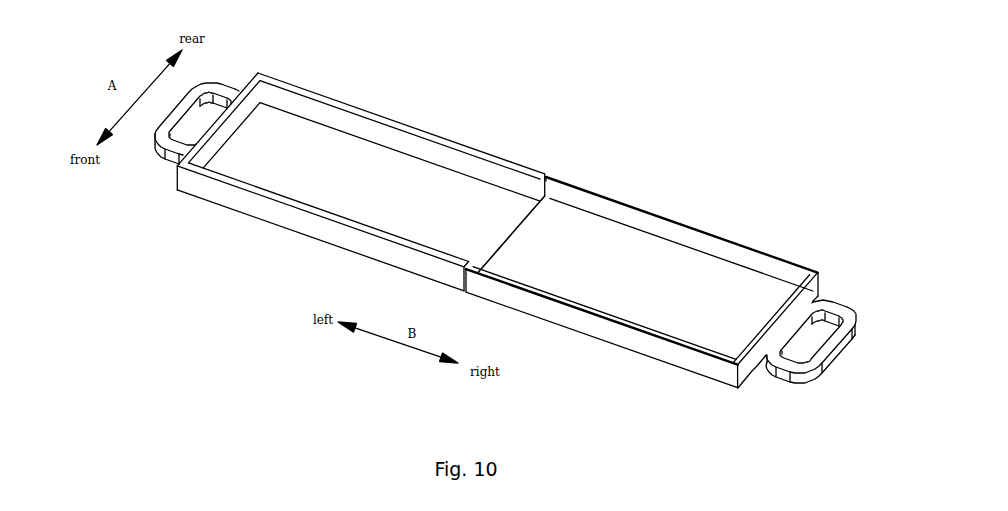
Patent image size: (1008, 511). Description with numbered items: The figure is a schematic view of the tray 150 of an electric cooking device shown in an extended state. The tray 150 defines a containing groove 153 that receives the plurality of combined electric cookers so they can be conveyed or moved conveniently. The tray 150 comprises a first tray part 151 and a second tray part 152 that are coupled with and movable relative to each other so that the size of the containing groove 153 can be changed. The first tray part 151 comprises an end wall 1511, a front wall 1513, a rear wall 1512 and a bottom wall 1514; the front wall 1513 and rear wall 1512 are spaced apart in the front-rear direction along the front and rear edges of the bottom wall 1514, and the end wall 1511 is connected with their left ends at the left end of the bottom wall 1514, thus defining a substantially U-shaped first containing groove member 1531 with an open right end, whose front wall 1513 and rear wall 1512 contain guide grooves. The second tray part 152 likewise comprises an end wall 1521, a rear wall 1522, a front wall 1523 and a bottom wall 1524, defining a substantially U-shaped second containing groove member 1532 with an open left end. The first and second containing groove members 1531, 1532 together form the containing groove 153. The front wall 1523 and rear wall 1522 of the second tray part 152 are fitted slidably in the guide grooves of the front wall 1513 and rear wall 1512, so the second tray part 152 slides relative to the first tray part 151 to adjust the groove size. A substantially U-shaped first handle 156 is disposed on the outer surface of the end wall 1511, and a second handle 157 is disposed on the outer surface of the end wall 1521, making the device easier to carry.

The tray 150 is at (697, 177).
The first tray part 151 is at (188, 188).
The end wall 1511 is at (253, 97).
The rear wall 1512 is at (312, 103).
The front wall 1513 is at (273, 210).
The bottom wall 1514 is at (350, 143).
The second tray part 152 is at (603, 332).
The end wall 1521 is at (770, 333).
The rear wall 1522 is at (710, 243).
The front wall 1523 is at (658, 352).
The bottom wall 1524 is at (742, 277).
The containing groove 153 is at (591, 144).
The first containing groove member 1531 is at (430, 187).
The second containing groove member 1532 is at (628, 233).
The first handle 156 is at (206, 83).
The second handle 157 is at (847, 307).